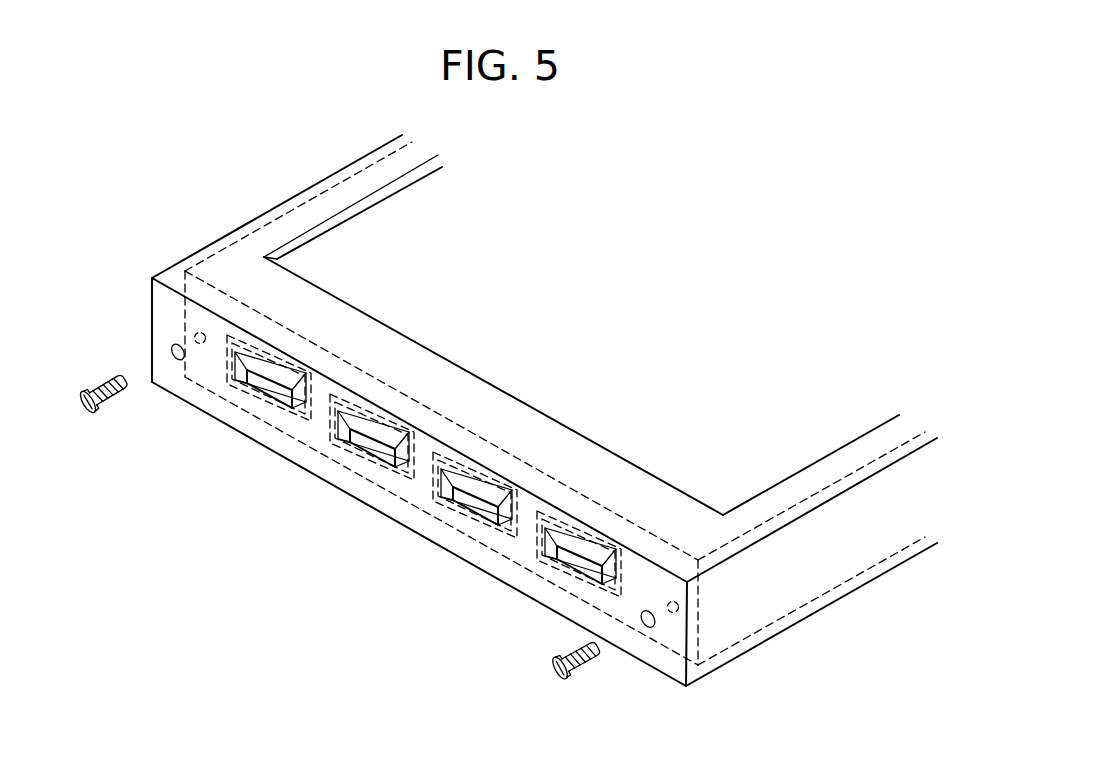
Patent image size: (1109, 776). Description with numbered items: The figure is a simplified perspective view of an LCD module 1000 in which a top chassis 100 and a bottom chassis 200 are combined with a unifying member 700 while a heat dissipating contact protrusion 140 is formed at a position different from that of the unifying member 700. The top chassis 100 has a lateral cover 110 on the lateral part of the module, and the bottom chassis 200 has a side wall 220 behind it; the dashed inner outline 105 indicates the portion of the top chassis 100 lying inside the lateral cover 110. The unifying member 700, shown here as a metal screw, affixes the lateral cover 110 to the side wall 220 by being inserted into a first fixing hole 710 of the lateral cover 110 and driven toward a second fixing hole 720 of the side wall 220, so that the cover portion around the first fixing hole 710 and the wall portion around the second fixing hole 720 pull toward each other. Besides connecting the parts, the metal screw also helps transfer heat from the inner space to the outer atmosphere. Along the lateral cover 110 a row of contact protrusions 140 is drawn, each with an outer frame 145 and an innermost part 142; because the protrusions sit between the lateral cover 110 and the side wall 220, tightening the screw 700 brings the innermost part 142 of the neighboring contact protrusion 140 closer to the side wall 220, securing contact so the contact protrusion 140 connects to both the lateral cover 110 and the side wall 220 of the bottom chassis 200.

The LCD module 1000 is at (544, 358).
The top chassis 100 is at (367, 414).
The inner frame 105 is at (220, 267).
The lateral cover 110 is at (177, 317).
The contact protrusion 140 is at (435, 525).
The innermost part 142 is at (490, 520).
The port frame 145 is at (453, 510).
The bottom chassis 200 is at (782, 593).
The side wall 220 is at (692, 630).
The unifying member 700 is at (112, 407).
The first fixing hole 710 is at (644, 627).
The second fixing hole 720 is at (673, 613).